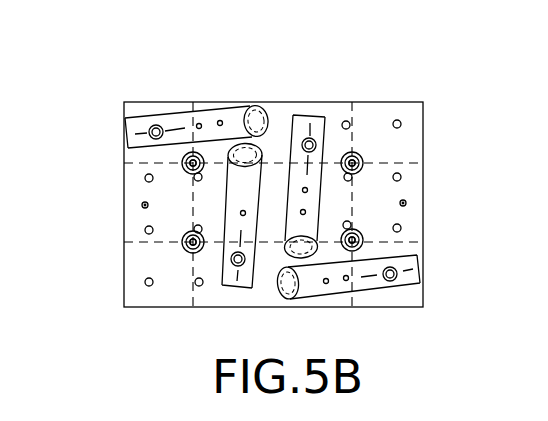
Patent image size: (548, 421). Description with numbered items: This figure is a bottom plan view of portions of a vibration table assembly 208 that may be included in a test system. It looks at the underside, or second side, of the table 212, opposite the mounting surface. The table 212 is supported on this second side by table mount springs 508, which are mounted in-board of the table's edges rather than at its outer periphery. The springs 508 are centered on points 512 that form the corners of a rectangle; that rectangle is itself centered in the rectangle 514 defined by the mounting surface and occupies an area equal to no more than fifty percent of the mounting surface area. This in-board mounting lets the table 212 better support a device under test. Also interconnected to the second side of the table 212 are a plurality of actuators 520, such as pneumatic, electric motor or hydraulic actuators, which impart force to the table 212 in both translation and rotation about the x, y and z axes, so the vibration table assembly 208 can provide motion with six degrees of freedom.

The vibration table assembly 208 is at (369, 70).
The table 212 is at (423, 265).
The table mount springs 508 is at (193, 152).
The points 512 is at (182, 163).
The rectangle 514 is at (195, 202).
The actuators 520 is at (238, 107).